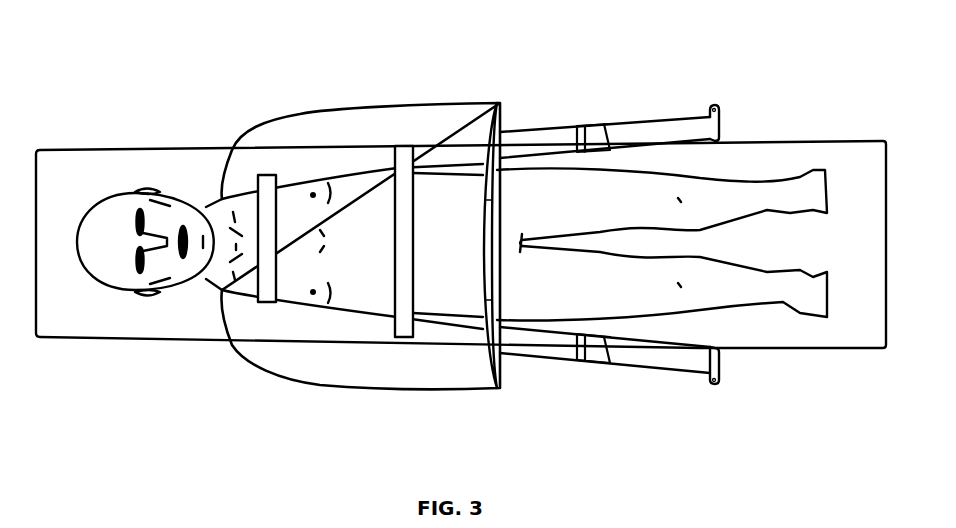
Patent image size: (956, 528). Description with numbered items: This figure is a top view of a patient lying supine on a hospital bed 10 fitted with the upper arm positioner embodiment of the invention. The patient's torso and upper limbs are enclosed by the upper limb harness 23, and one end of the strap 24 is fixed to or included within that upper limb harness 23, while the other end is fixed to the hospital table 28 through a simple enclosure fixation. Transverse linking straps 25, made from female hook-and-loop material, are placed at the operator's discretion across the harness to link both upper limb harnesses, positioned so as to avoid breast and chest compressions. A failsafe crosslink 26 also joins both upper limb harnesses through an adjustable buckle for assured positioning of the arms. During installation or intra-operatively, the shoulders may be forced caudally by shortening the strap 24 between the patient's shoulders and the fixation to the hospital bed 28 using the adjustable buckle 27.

The hospital bed 10 is at (103, 168).
The upper limb harness 23 is at (452, 123).
The strap 24 is at (563, 145).
The transverse linking straps 25 is at (403, 280).
The failsafe crosslink 26 is at (500, 252).
The adjustable buckle 27 is at (601, 349).
The hospital table fixation 28 is at (698, 349).